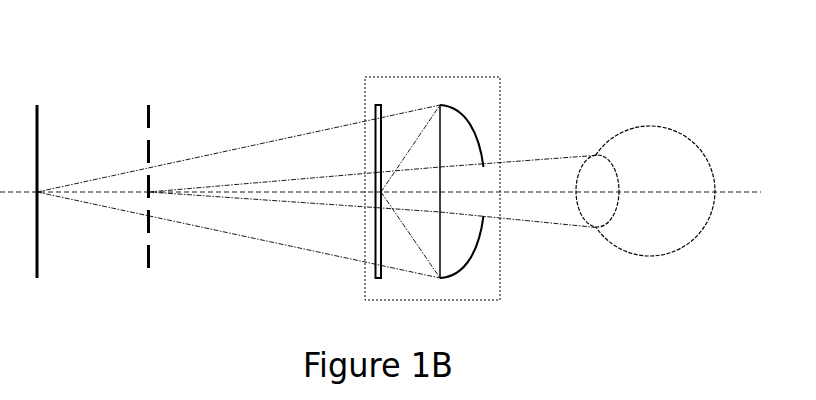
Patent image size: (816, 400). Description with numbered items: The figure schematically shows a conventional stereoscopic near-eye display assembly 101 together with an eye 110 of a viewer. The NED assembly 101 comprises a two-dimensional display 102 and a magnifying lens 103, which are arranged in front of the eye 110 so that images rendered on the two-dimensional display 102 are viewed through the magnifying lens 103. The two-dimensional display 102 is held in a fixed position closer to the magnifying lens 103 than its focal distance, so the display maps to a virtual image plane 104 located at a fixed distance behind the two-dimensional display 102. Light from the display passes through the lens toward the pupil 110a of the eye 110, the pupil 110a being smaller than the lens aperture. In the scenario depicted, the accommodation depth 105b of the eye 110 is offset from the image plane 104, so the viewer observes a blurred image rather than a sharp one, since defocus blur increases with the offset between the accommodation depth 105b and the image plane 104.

The near-eye display assembly 101 is at (367, 120).
The two-dimensional display 102 is at (384, 113).
The magnifying lens 103 is at (457, 108).
The image plane 104 is at (38, 117).
The accommodation depth 105b is at (149, 117).
The eye 110 is at (684, 142).
The pupil 110a is at (592, 213).